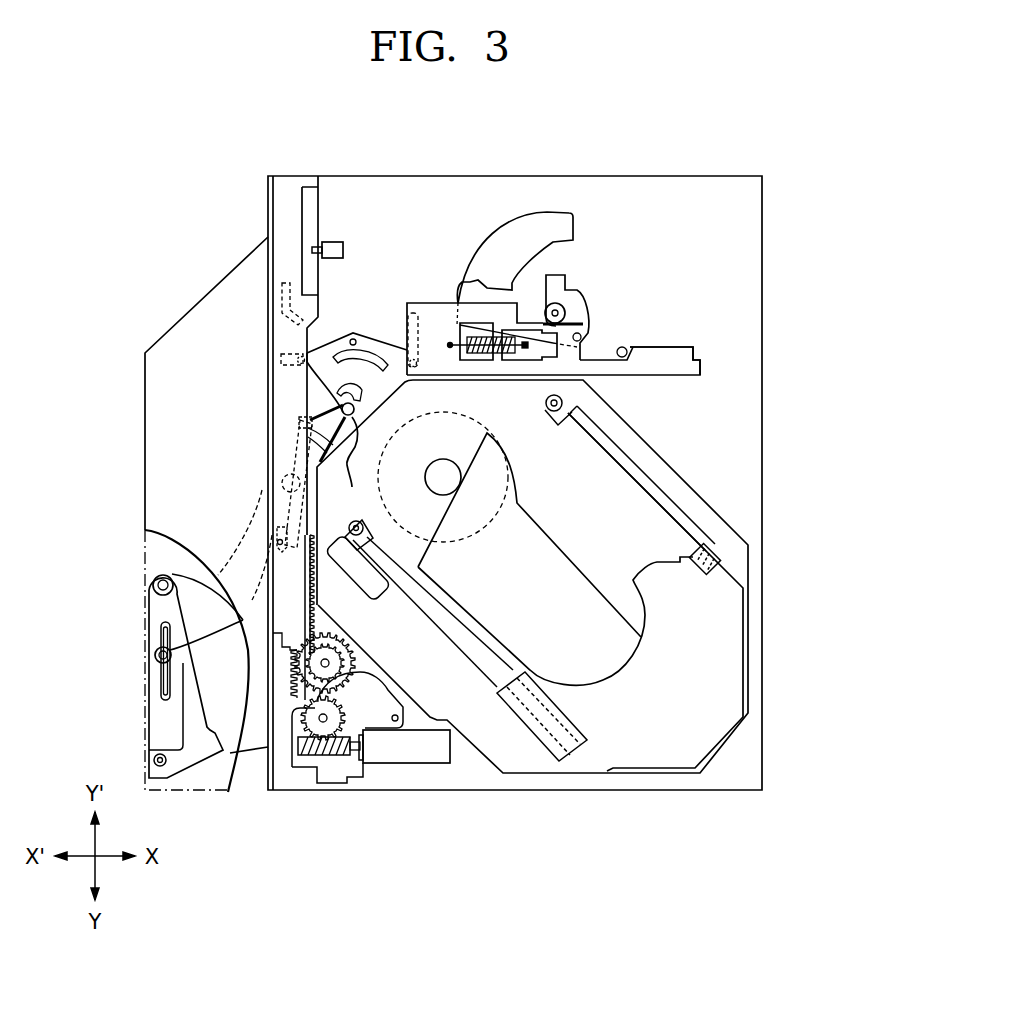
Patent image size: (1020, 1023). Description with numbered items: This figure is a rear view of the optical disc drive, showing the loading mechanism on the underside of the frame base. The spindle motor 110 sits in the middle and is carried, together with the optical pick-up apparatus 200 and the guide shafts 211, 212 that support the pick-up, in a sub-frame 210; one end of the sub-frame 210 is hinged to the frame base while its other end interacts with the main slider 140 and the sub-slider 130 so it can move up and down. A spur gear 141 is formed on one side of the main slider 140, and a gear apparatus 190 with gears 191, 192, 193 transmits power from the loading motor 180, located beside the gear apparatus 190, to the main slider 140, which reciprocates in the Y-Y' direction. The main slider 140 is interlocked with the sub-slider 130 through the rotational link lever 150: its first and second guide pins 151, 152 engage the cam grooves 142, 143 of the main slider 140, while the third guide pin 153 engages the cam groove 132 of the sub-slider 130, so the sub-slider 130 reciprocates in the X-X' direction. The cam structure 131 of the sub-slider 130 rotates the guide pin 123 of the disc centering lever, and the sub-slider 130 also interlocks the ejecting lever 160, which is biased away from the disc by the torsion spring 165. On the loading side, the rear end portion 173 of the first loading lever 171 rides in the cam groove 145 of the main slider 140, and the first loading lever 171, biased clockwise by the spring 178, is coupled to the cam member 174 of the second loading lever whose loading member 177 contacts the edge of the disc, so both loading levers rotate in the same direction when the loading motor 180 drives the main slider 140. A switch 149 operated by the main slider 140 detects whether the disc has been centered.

The spindle motor 110 is at (450, 485).
The guide pin 123 is at (620, 347).
The sub-slider 130 is at (438, 302).
The cam structure 131 is at (633, 347).
The cam groove 132 is at (411, 312).
The main slider 140 is at (283, 180).
The spur gear 141 is at (313, 600).
The cam groove 142 is at (283, 359).
The cam groove 143 is at (287, 290).
The cam groove 145 is at (282, 505).
The switch 149 is at (330, 242).
The rotational link lever 150 is at (328, 342).
The first guide pin 151 is at (297, 361).
The second guide pin 152 is at (353, 335).
The third guide pin 153 is at (413, 358).
The ejecting lever 160 is at (488, 282).
The torsion spring 165 is at (549, 292).
The first loading lever 171 is at (213, 600).
The rear end portion 173 is at (300, 422).
The cam member 174 is at (165, 681).
The loading member 177 is at (155, 760).
The spring 178 is at (355, 437).
The loading motor 180 is at (403, 758).
The gear apparatus 190 is at (316, 764).
The gear 191 is at (332, 680).
The gear 192 is at (297, 676).
The gear 193 is at (333, 740).
The optical pick-up apparatus 200 is at (648, 762).
The sub-frame 210 is at (667, 473).
The guide shaft 211 is at (487, 653).
The guide shaft 212 is at (633, 492).